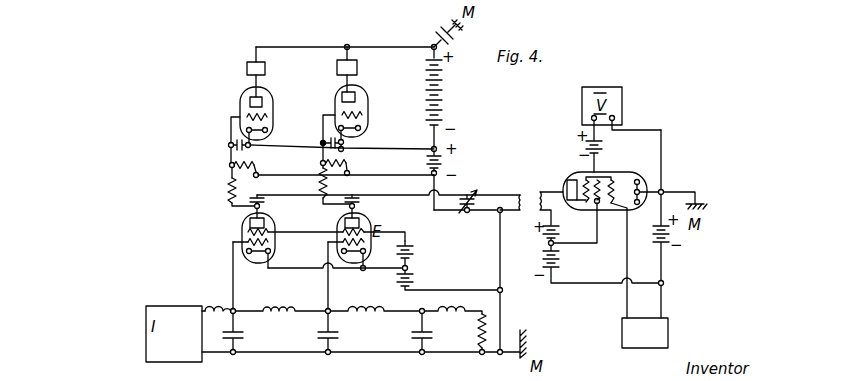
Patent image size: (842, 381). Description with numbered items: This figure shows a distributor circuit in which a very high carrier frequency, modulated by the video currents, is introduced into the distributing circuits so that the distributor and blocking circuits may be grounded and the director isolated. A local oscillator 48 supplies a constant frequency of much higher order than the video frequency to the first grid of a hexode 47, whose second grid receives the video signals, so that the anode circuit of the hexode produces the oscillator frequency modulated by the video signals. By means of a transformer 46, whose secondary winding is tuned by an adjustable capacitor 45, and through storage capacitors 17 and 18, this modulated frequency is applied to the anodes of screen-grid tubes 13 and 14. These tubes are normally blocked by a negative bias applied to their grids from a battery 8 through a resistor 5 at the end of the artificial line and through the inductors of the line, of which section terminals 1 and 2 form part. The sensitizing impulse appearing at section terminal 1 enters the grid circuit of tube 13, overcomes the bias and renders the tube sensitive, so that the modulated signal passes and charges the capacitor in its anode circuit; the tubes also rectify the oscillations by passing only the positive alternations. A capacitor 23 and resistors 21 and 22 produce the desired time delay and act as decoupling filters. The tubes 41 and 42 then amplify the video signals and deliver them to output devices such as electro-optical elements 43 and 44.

The section terminal 1 is at (214, 308).
The section terminal 2 is at (281, 306).
The resistor 5 is at (472, 332).
The battery 8 is at (447, 262).
The vacuum tube 13 is at (245, 224).
The vacuum tube 14 is at (340, 224).
The storage capacitor 17 is at (268, 206).
The storage capacitor 18 is at (362, 206).
The resistor 21 is at (230, 187).
The resistor 22 is at (230, 164).
The capacitor 23 is at (231, 130).
The amplifier tube 41 is at (241, 93).
The amplifier tube 42 is at (337, 97).
The electro-optical element 43 is at (249, 62).
The electro-optical element 44 is at (337, 68).
The adjustable capacitor 45 is at (465, 197).
The transformer 46 is at (533, 193).
The hexode 47 is at (621, 172).
The local oscillator 48 is at (645, 333).